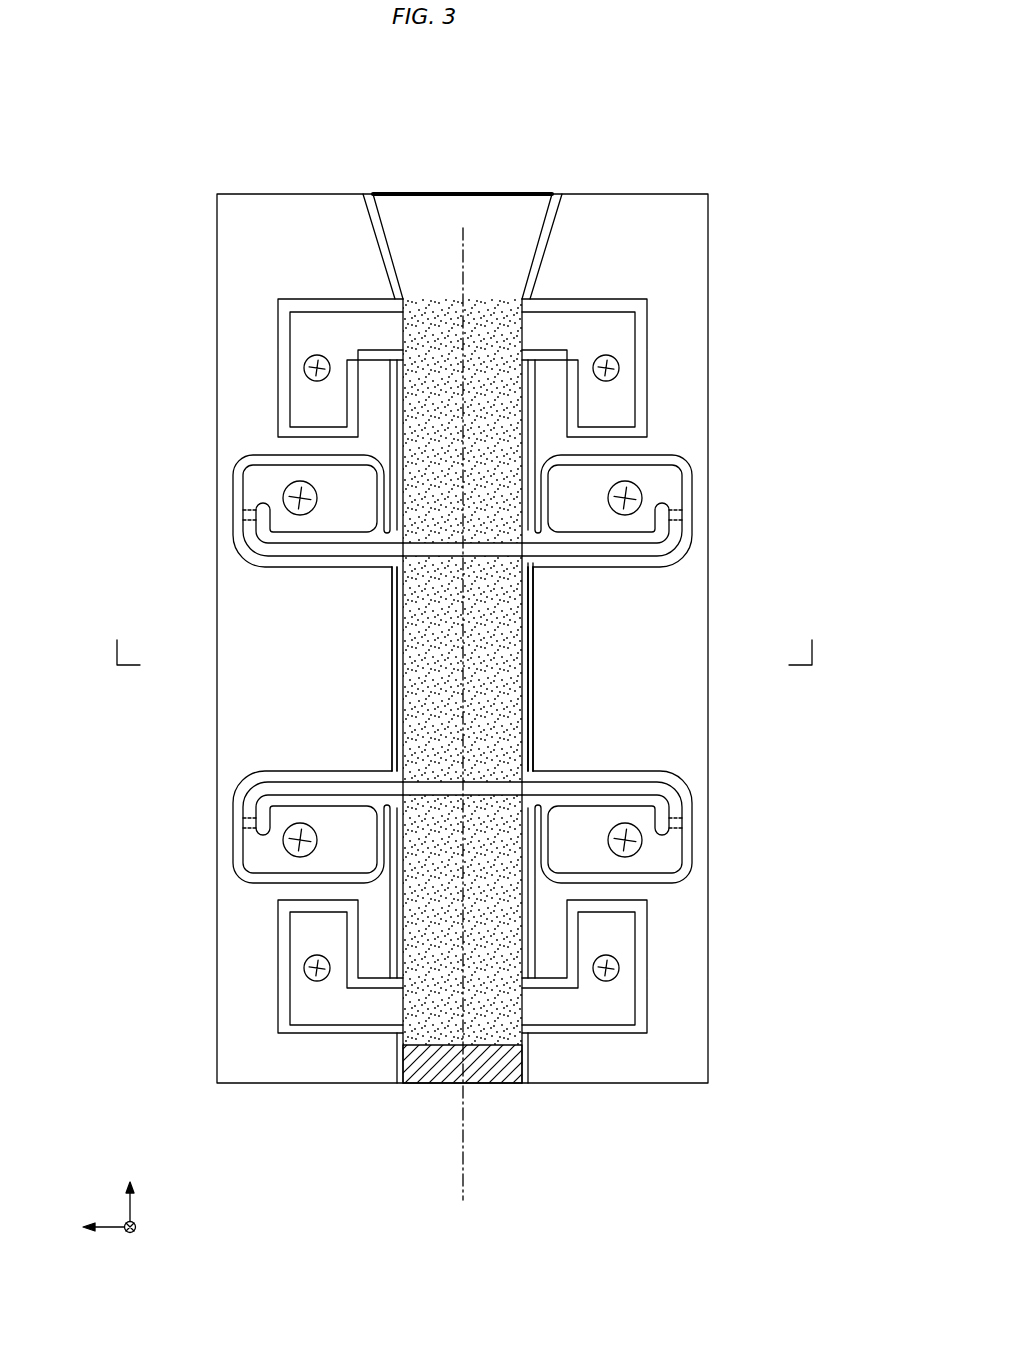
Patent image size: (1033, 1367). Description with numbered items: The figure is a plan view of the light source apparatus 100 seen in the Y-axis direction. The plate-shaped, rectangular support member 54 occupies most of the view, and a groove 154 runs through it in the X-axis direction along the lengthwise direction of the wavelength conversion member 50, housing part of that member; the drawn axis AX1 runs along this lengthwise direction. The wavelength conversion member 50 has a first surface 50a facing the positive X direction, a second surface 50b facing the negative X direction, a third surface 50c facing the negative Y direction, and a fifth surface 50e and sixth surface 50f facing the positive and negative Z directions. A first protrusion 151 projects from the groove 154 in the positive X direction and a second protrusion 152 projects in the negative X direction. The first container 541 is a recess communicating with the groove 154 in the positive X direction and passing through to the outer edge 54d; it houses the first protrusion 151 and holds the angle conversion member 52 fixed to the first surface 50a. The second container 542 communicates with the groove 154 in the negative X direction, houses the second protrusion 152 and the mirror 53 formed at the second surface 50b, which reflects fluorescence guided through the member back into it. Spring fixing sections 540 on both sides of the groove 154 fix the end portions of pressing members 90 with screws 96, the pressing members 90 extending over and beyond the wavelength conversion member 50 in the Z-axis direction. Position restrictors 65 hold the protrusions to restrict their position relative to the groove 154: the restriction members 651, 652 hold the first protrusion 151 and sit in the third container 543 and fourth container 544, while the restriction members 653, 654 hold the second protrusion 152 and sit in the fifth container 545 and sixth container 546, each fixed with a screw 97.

The light source apparatus 100 is at (752, 118).
The support member 54 is at (690, 170).
The outer edge 54d is at (706, 195).
The angle conversion member 52 is at (475, 191).
The first container 541 is at (383, 250).
The fourth container 544 is at (587, 299).
The third container 543 is at (287, 312).
The fifth container 545 is at (285, 1032).
The sixth container 546 is at (640, 1033).
The second container 542 is at (527, 1053).
The wavelength conversion member 50 is at (431, 677).
The first surface 50a is at (437, 298).
The second surface 50b is at (486, 1042).
The third surface 50c is at (505, 620).
The fifth surface 50e is at (400, 331).
The sixth surface 50f is at (522, 332).
The groove 154 is at (545, 720).
The mirror 53 is at (440, 1062).
The first protrusion 151 is at (455, 331).
The second protrusion 152 is at (475, 1020).
The axis AX1 is at (460, 1187).
The position restrictor 65 is at (452, 662).
The restriction member 651 is at (305, 408).
The restriction member 652 is at (620, 408).
The restriction member 653 is at (312, 1002).
The restriction member 654 is at (620, 1003).
The screw 97 is at (305, 368).
The screw 96 is at (283, 507).
The pressing member 90 is at (459, 669).
The spring fixing section 540 is at (240, 475).